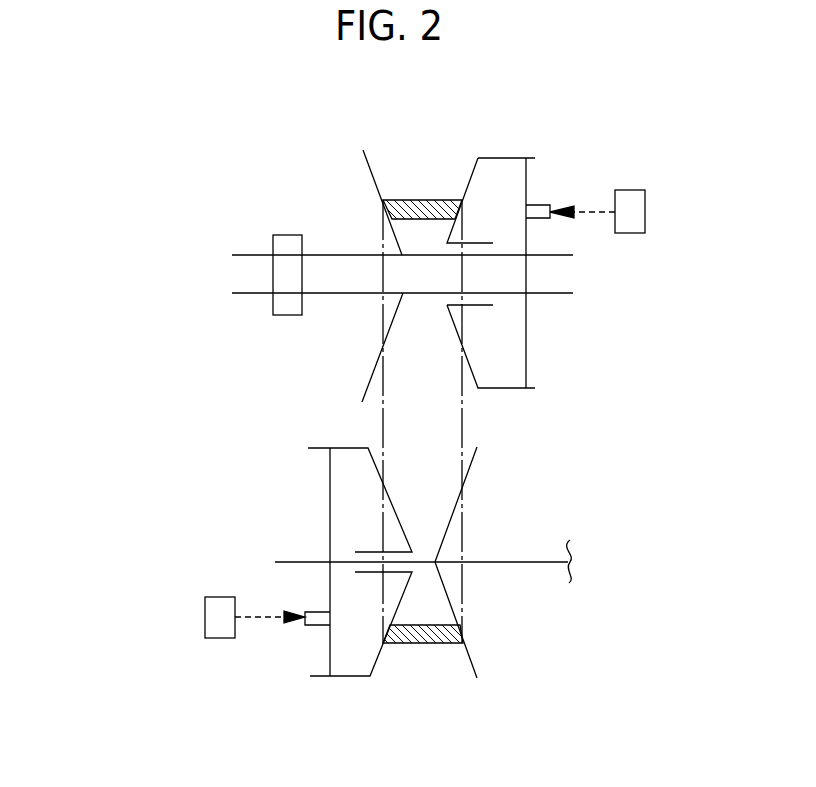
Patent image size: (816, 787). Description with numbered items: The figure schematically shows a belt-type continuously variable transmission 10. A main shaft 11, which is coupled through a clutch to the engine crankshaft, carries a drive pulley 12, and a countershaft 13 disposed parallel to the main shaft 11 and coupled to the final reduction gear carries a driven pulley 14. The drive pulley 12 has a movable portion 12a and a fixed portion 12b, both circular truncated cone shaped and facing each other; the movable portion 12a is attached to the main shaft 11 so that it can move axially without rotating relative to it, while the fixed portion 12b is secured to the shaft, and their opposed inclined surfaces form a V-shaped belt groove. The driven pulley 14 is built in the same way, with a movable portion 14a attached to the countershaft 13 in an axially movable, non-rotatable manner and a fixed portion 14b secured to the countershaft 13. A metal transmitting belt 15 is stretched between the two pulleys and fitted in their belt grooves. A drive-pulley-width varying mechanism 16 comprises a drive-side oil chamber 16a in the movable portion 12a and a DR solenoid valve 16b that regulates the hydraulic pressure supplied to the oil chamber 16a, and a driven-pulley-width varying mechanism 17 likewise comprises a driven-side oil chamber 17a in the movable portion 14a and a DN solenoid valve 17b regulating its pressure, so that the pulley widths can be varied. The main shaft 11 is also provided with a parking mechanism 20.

The continuously variable transmission 10 is at (588, 89).
The main shaft 11 is at (355, 255).
The drive pulley 12 is at (483, 157).
The movable portion 12a is at (491, 273).
The fixed portion 12b is at (373, 166).
The countershaft 13 is at (295, 562).
The driven pulley 14 is at (325, 678).
The movable portion 14a is at (360, 562).
The fixed portion 14b is at (472, 668).
The transmitting belt 15 is at (420, 198).
The drive-pulley-width varying mechanism 16 is at (662, 160).
The drive-side oil chamber 16a is at (508, 192).
The DR solenoid valve 16b is at (582, 212).
The driven-pulley-width varying mechanism 17 is at (205, 615).
The driven-side oil chamber 17a is at (343, 637).
The DN solenoid valve 17b is at (270, 617).
The parking mechanism 20 is at (288, 234).